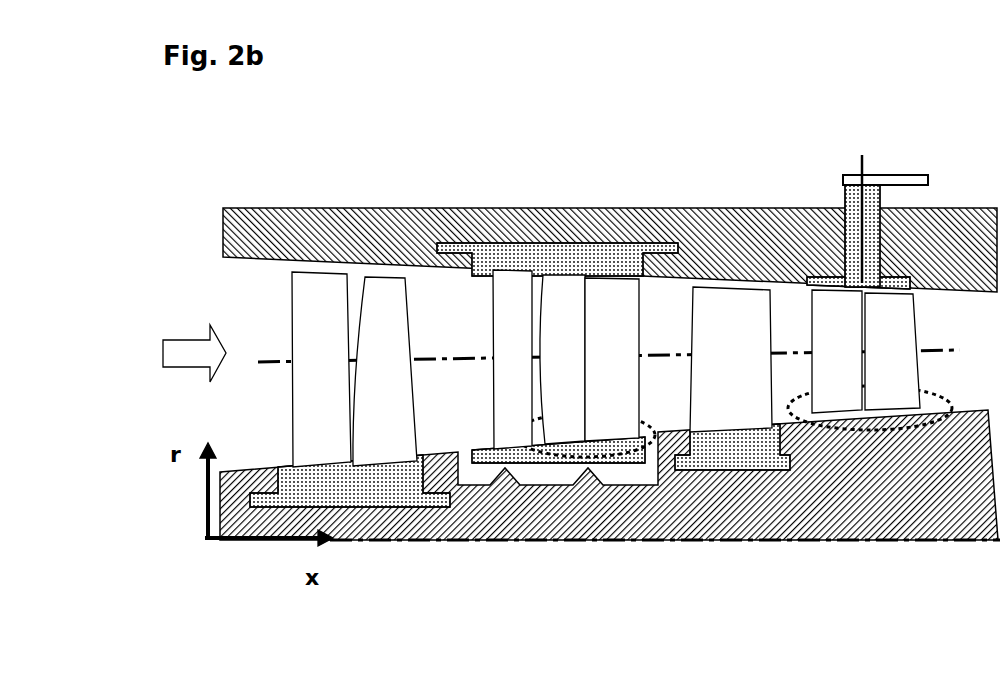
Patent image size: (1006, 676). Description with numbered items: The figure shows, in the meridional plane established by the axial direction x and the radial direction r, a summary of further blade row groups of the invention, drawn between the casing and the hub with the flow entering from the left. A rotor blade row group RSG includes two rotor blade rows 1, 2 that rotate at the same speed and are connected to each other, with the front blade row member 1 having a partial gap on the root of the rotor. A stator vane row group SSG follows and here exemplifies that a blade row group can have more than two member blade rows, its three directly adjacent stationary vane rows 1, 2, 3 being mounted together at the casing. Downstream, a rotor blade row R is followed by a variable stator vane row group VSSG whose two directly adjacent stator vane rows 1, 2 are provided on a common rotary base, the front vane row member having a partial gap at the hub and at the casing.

The rotor blade row group RSG is at (273, 157).
The stator vane row group SSG is at (472, 157).
The rotor blade R is at (655, 157).
The variable stator vane row group VSSG is at (800, 157).
The front blade row member 1 is at (577, 368).
The second blade row member 2 is at (636, 370).
The third member blade row 3 is at (612, 359).